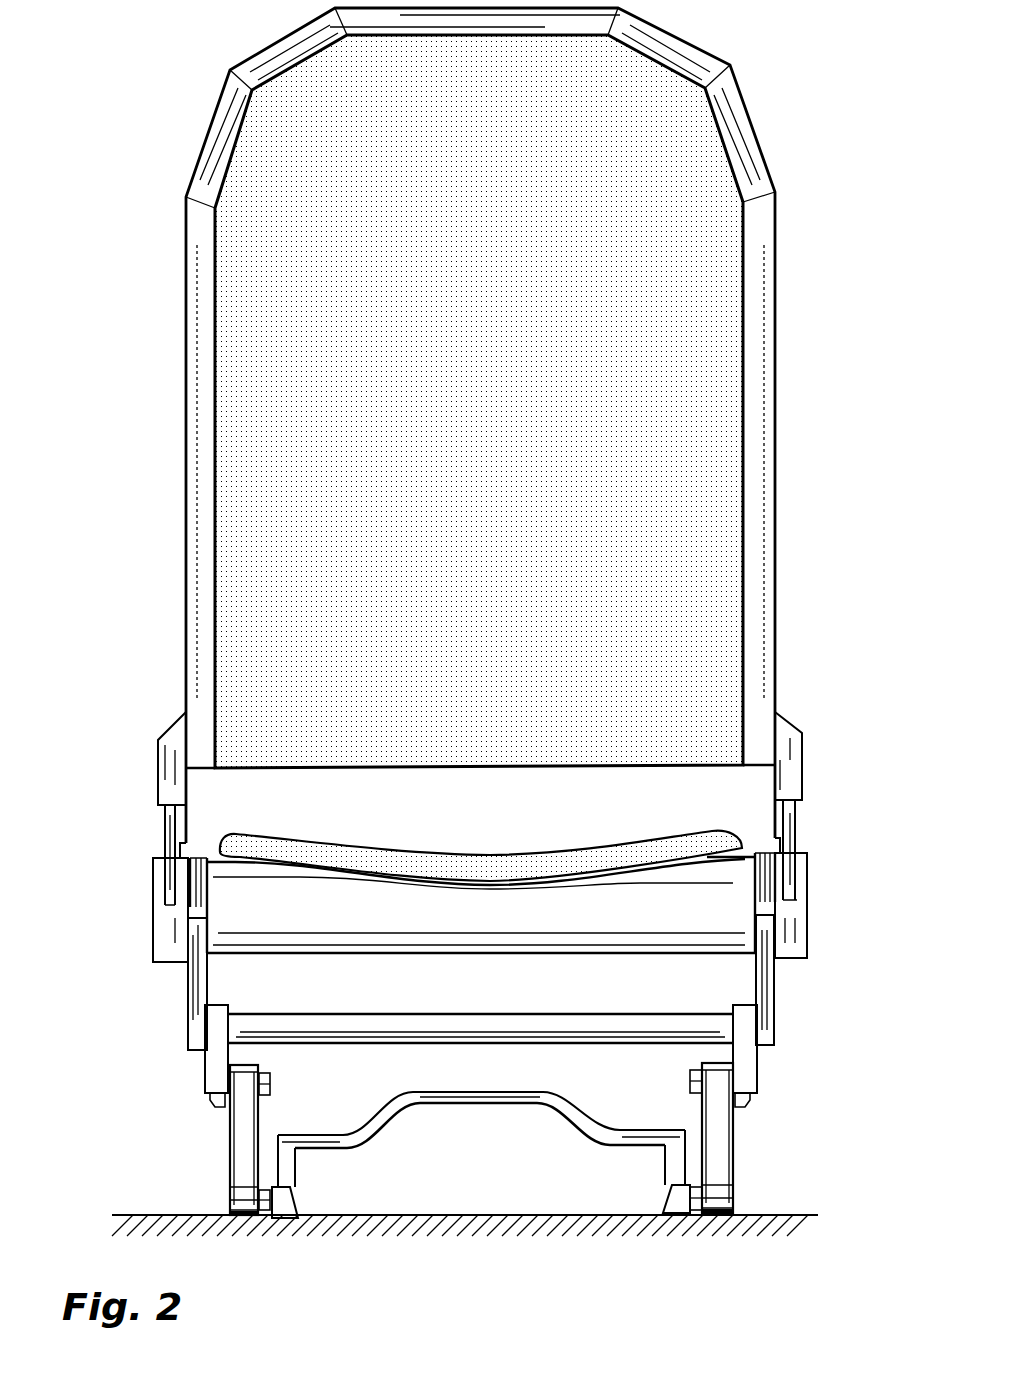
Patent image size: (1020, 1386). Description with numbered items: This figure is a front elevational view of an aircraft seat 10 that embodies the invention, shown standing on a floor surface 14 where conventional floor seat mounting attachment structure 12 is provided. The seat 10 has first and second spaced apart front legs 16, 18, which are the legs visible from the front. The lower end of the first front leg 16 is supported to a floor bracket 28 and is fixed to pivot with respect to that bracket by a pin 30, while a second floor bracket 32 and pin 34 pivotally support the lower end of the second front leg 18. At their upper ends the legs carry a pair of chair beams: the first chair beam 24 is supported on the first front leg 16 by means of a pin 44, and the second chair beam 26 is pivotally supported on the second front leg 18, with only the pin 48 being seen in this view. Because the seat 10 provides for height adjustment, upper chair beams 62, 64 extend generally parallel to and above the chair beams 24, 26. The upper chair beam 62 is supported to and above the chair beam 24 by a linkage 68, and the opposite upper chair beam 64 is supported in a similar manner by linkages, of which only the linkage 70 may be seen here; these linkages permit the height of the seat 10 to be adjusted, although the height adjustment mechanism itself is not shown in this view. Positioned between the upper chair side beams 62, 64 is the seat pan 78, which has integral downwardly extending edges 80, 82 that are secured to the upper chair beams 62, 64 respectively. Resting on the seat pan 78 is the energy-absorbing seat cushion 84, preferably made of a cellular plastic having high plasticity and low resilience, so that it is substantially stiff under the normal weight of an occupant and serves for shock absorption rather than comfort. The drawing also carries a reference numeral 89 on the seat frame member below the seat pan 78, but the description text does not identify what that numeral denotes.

The aircraft seat 10 is at (790, 415).
The floor seat mounting attachment structure 12 is at (777, 1233).
The floor surface 14 is at (160, 1214).
The first front leg 16 is at (722, 1120).
The second front leg 18 is at (242, 1138).
The first chair beam 24 is at (745, 1057).
The second chair beam 26 is at (217, 1058).
The floor bracket 28 is at (675, 1207).
The pin 30 is at (690, 1188).
The second floor bracket 32 is at (287, 1210).
The pin 34 is at (265, 1188).
The pin 44 is at (690, 1075).
The pin 48 is at (271, 1084).
The upper chair beam 62 is at (792, 942).
The upper chair beam 64 is at (167, 930).
The linkage 68 is at (765, 983).
The linkage 70 is at (195, 997).
The seat pan 78 is at (498, 886).
The downwardly extending edge 80 is at (747, 882).
The downwardly extending edge 82 is at (208, 887).
The seat cushion 84 is at (513, 850).
The seat frame member 89 is at (343, 940).